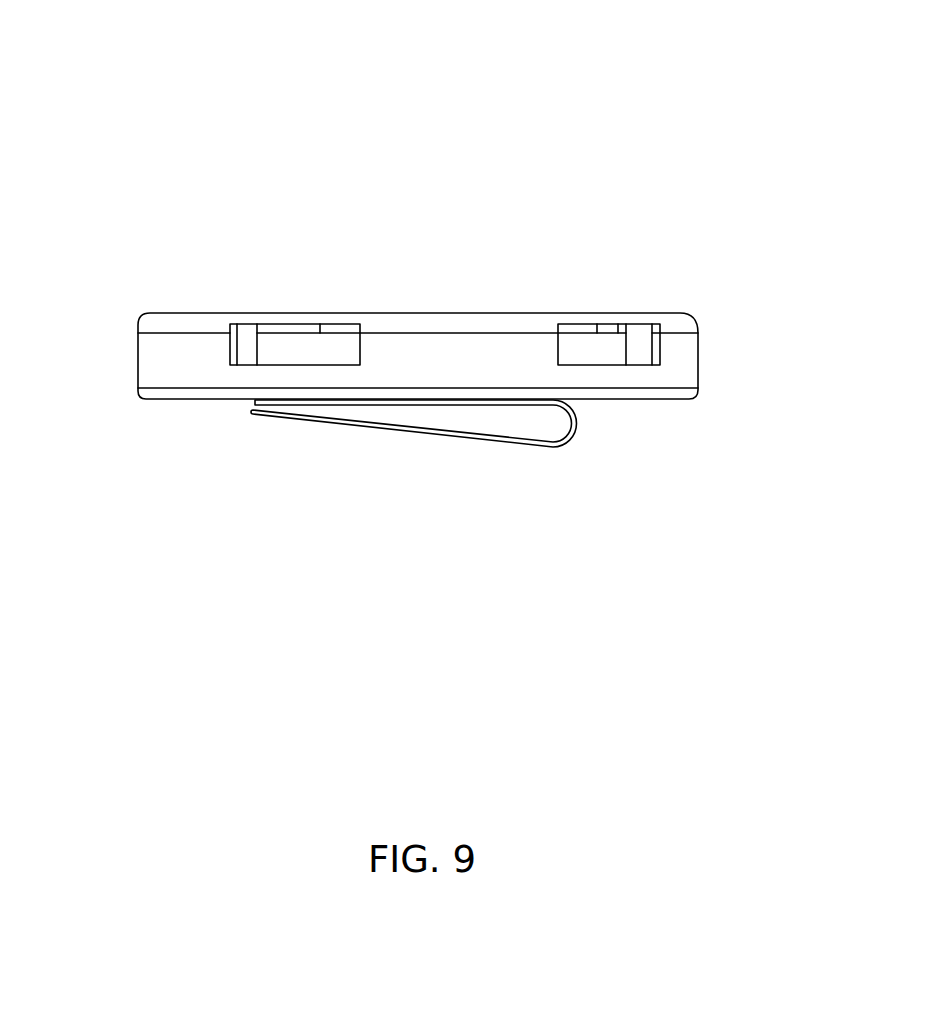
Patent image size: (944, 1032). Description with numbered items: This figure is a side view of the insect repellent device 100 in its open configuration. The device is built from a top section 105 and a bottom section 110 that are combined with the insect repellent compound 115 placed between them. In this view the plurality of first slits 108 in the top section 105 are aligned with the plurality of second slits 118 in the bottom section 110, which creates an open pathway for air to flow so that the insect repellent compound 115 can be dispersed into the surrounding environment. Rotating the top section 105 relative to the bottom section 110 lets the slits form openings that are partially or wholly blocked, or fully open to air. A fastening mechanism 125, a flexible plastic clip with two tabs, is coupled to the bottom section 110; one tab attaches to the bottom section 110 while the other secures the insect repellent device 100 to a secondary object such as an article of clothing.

The insect repellent device 100 is at (549, 44).
The top section 105 is at (466, 313).
The plurality of first slits 108 is at (237, 347).
The bottom section 110 is at (671, 399).
The insect repellent compound 115 is at (318, 351).
The plurality of second slits 118 is at (594, 366).
The fastening mechanism 125 is at (428, 438).